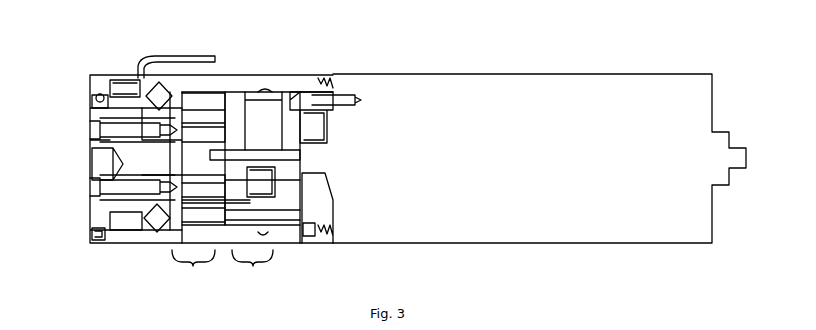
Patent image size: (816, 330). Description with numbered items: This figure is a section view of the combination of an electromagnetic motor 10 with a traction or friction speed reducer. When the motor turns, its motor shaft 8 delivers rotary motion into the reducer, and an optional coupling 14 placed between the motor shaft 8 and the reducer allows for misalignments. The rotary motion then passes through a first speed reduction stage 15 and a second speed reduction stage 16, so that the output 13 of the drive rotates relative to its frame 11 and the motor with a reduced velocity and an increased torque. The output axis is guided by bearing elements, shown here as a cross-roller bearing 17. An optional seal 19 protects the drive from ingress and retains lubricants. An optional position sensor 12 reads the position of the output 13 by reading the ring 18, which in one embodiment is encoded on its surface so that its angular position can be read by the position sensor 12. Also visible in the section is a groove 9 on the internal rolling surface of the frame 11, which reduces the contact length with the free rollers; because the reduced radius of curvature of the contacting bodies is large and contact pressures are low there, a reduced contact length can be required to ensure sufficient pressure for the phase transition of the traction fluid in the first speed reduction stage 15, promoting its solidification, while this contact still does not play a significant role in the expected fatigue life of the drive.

The motor shaft 8 is at (313, 160).
The groove 9 is at (266, 88).
The electromagnetic motor 10 is at (447, 83).
The frame 11 is at (293, 80).
The position sensor 12 is at (128, 80).
The output 13 is at (87, 112).
The coupling 14 is at (294, 192).
The first speed reduction stage 15 is at (255, 191).
The second speed reduction stage 16 is at (195, 191).
The cross-roller bearing 17 is at (157, 226).
The ring 18 is at (123, 220).
The seal 19 is at (86, 232).